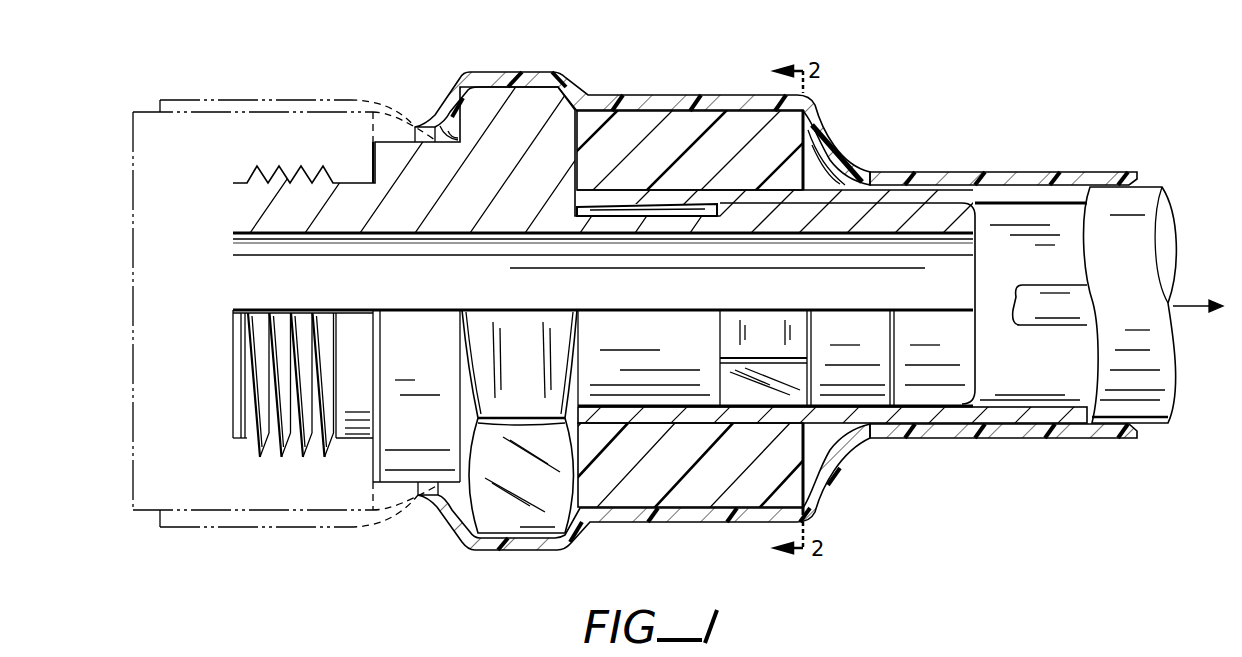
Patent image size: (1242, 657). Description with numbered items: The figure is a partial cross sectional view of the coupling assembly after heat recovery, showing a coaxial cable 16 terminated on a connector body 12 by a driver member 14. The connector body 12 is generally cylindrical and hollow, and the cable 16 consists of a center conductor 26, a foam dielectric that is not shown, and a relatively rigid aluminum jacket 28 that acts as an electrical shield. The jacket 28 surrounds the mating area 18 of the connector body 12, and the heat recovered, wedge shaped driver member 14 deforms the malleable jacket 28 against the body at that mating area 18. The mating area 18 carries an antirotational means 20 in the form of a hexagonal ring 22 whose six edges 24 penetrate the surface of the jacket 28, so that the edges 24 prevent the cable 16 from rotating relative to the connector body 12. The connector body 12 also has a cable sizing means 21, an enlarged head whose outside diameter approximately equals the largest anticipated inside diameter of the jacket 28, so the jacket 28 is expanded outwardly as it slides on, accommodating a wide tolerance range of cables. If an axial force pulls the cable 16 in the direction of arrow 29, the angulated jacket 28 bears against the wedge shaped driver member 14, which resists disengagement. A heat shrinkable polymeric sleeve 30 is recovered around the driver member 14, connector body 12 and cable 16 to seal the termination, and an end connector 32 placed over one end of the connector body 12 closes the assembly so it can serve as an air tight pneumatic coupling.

The connector body 12 is at (503, 130).
The driver member 14 is at (752, 128).
The coaxial cable 16 is at (1152, 357).
The mating area 18 is at (690, 199).
The antirotational means 20 is at (748, 420).
The cable sizing means 21 is at (905, 205).
The hexagonal ring 22 is at (790, 343).
The edges 24 is at (807, 382).
The center conductor 26 is at (1060, 305).
The jacket 28 is at (1050, 192).
The arrow 29 is at (1188, 303).
The heat shrinkable polymeric sleeve 30 is at (640, 93).
The end connector 32 is at (348, 111).